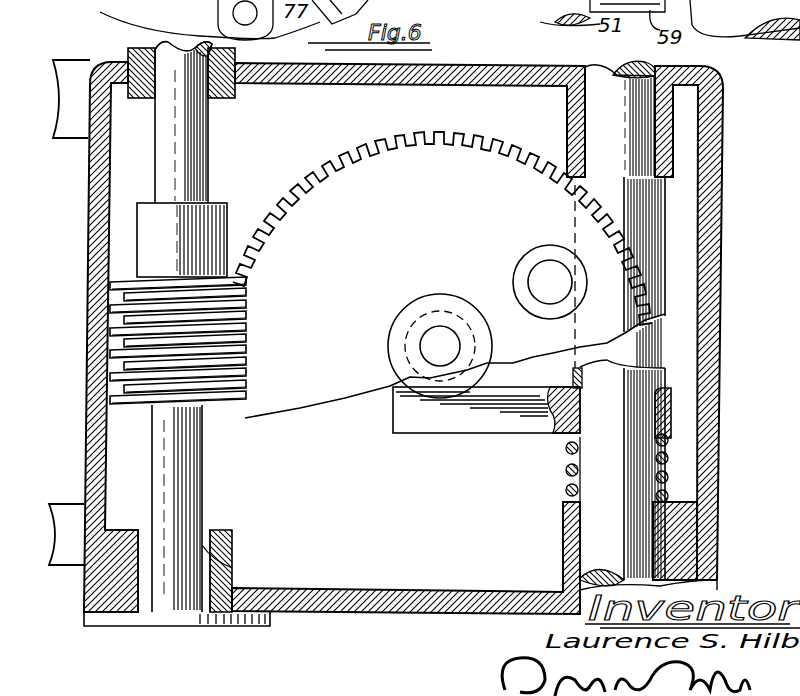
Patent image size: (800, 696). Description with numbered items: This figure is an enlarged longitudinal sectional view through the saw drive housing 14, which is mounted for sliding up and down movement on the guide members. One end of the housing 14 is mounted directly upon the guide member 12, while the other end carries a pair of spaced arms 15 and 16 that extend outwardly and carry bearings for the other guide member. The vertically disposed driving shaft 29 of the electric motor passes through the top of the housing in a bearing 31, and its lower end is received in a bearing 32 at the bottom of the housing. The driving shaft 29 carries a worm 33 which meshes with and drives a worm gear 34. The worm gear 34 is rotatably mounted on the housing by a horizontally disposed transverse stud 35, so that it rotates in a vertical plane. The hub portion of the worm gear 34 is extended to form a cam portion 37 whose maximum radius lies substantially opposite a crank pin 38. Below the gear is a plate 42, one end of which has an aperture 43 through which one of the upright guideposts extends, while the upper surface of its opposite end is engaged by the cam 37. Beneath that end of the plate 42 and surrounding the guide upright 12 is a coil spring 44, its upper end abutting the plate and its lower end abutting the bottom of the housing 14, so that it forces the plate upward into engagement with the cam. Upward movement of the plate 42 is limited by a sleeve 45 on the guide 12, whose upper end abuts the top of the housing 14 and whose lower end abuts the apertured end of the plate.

The guide member 12 is at (630, 402).
The housing 14 is at (710, 227).
The arm 15 is at (75, 78).
The arm 16 is at (60, 520).
The driving shaft 29 is at (190, 159).
The bearing 31 is at (222, 96).
The bearing 32 is at (218, 548).
The worm 33 is at (218, 405).
The worm gear 34 is at (449, 275).
The stud 35 is at (441, 338).
The cam portion 37 is at (405, 348).
The crank pin 38 is at (546, 272).
The plate 42 is at (505, 418).
The aperture 43 is at (671, 388).
The coil spring 44 is at (668, 477).
The sleeve 45 is at (643, 247).